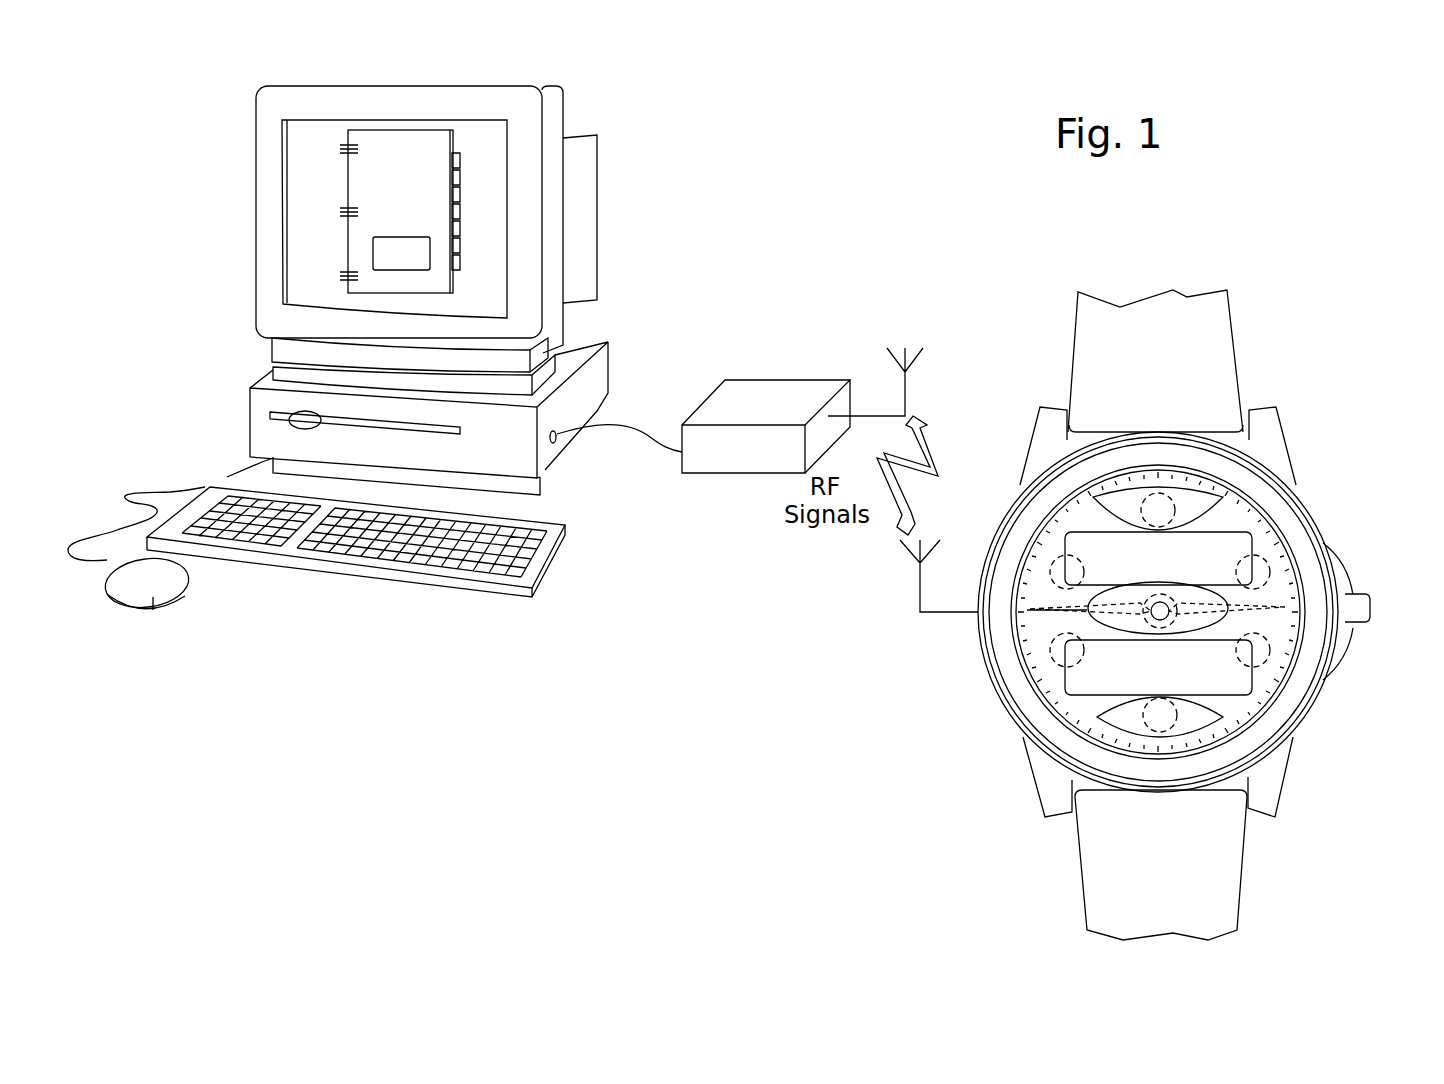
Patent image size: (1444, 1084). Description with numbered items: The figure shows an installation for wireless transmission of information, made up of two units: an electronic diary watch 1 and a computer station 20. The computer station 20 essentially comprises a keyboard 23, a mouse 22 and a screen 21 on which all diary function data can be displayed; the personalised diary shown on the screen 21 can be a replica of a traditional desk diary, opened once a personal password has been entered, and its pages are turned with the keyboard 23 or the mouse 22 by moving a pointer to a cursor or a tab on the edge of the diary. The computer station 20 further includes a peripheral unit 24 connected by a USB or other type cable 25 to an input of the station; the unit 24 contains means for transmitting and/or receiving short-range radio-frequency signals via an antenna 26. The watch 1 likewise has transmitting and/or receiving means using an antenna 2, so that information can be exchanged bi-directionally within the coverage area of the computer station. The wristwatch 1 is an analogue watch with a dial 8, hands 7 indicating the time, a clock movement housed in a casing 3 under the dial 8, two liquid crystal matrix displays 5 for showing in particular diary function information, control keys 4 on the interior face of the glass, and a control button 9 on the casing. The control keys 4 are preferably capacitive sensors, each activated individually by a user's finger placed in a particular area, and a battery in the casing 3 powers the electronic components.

The electronic diary watch 1 is at (992, 774).
The antenna 2 is at (920, 592).
The casing 3 is at (1316, 706).
The control keys 4 is at (1170, 507).
The liquid crystal matrix displays 5 is at (1242, 547).
The hands 7 is at (1088, 606).
The dial 8 is at (1200, 717).
The control button 9 is at (1372, 607).
The computer station 20 is at (629, 143).
The screen 21 is at (313, 216).
The mouse 22 is at (152, 604).
The keyboard 23 is at (358, 550).
The peripheral unit 24 is at (752, 390).
The cable 25 is at (555, 441).
The antenna 26 is at (870, 410).